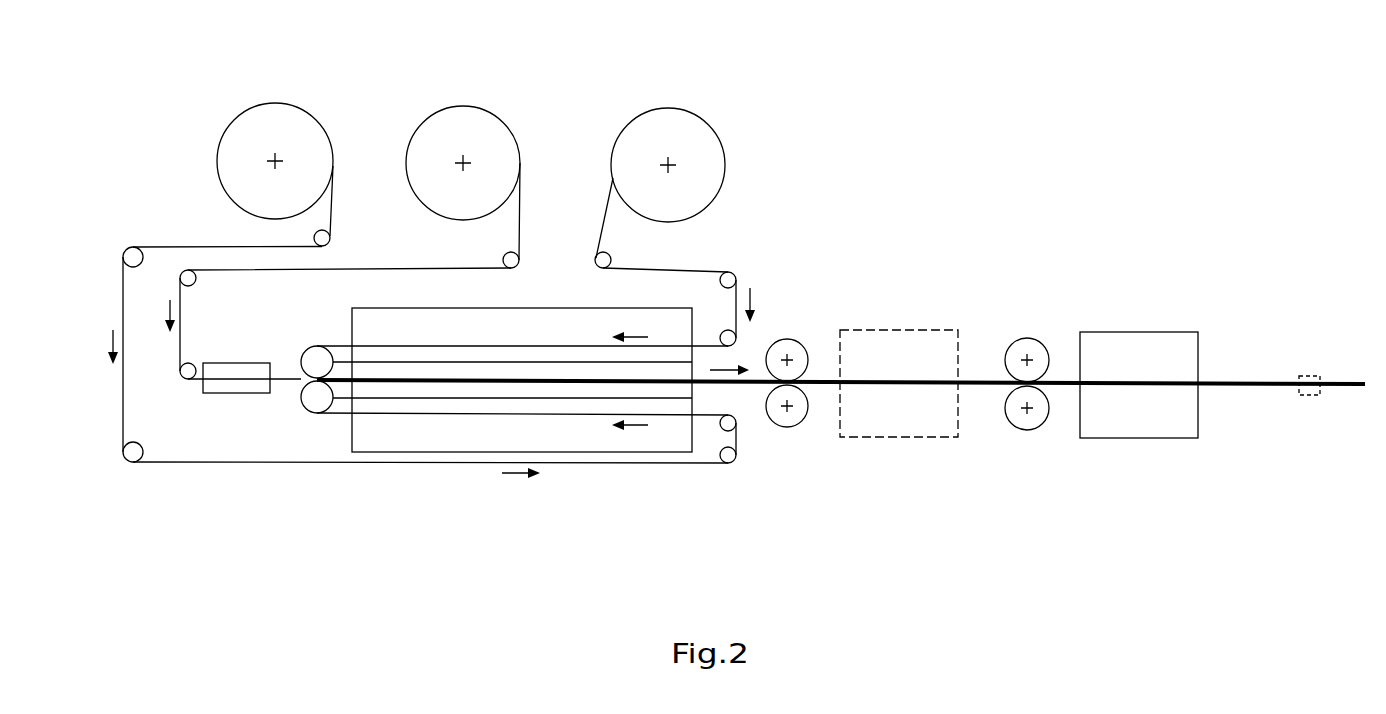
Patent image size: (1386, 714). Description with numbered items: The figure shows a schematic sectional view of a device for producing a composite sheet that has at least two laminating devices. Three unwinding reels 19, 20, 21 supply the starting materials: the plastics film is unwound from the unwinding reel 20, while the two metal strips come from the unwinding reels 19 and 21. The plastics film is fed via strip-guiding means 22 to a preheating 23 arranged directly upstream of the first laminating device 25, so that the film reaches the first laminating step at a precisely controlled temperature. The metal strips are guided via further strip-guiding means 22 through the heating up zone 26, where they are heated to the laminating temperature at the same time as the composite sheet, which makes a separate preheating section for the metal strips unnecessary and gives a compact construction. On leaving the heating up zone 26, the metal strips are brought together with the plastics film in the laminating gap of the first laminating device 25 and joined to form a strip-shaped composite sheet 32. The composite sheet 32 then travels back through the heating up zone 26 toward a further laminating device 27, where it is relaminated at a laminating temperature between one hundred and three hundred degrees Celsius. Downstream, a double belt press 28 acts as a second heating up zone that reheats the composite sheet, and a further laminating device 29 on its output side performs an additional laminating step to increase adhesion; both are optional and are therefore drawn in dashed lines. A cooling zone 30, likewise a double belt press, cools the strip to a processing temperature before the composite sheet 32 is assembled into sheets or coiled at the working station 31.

The unwinding reel 19 is at (260, 127).
The unwinding reel 20 is at (445, 125).
The unwinding reel 21 is at (680, 125).
The strip-guiding means 22 is at (131, 247).
The preheating 23 is at (230, 387).
The first laminating device 25 is at (310, 430).
The heating up zone 26 is at (455, 433).
The further laminating device 27 is at (799, 315).
The double belt press 28 is at (918, 345).
The further laminating device 29 is at (1038, 316).
The cooling zone 30 is at (1163, 350).
The working station 31 is at (1314, 372).
The composite sheet 32 is at (397, 385).